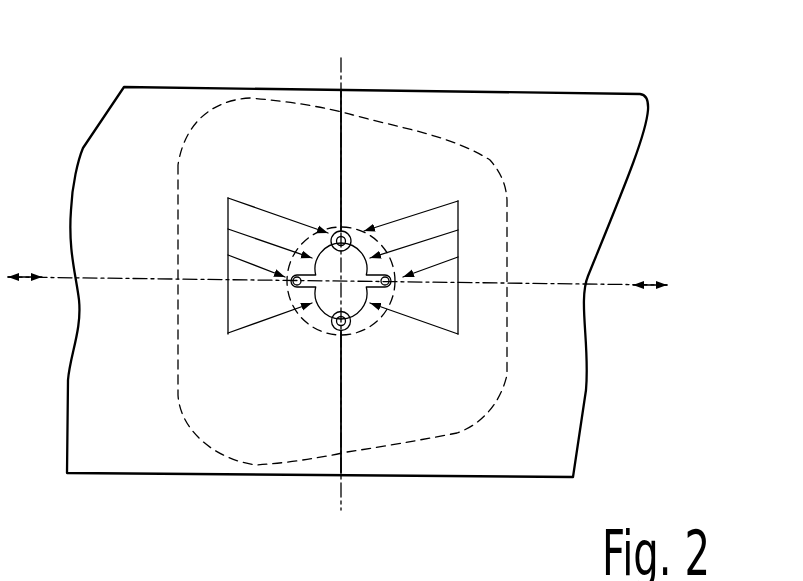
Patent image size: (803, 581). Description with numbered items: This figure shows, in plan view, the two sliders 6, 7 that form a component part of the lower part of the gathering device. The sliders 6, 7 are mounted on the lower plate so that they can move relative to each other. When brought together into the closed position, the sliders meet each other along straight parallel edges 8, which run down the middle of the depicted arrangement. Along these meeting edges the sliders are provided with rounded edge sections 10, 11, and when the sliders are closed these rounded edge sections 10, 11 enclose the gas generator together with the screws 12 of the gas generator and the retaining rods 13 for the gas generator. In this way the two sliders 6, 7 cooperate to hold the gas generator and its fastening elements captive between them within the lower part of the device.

The slider 6 is at (152, 112).
The slider 7 is at (525, 123).
The straight parallel edges 8 is at (343, 148).
The rounded edge section 10 is at (267, 239).
The rounded edge section 11 is at (422, 249).
The screws 12 is at (287, 288).
The retaining rods 13 is at (347, 232).